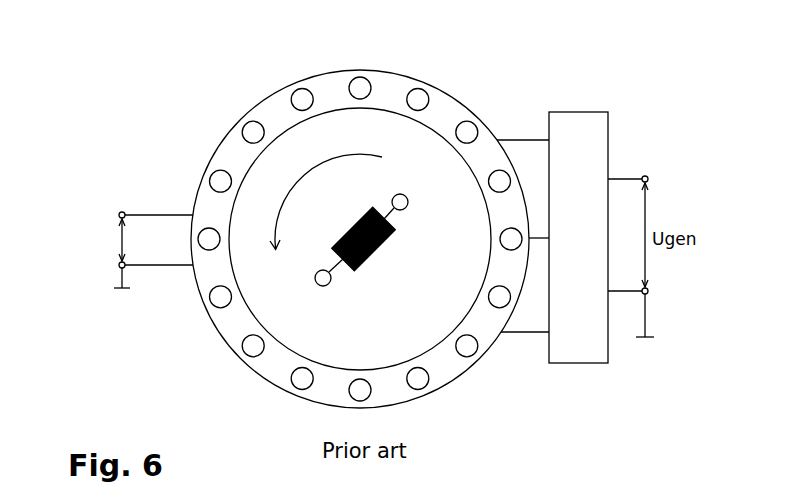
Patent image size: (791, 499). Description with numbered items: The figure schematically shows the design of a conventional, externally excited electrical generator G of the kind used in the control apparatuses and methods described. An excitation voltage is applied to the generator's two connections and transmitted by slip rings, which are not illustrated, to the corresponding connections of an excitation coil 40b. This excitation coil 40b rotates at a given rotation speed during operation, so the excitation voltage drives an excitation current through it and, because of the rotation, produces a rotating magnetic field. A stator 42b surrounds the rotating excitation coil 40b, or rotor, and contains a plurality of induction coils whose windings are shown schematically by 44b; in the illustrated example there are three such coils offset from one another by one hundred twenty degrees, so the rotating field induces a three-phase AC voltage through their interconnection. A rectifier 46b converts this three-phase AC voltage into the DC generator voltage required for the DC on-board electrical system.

The electrical generator G is at (232, 59).
The stator 42b is at (467, 90).
The induction coil windings 44b is at (362, 88).
The excitation coil 40b is at (385, 263).
The rectifier 46b is at (592, 250).